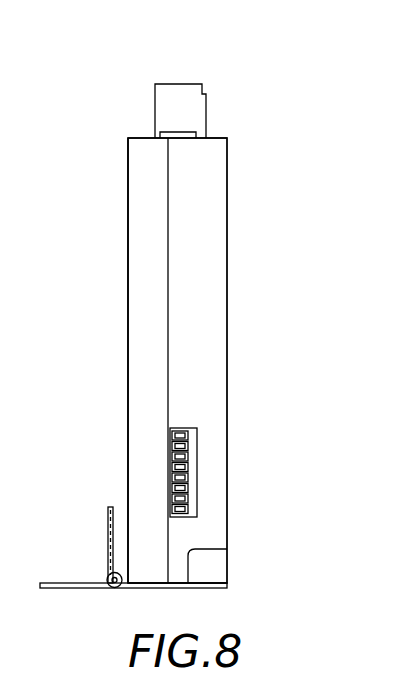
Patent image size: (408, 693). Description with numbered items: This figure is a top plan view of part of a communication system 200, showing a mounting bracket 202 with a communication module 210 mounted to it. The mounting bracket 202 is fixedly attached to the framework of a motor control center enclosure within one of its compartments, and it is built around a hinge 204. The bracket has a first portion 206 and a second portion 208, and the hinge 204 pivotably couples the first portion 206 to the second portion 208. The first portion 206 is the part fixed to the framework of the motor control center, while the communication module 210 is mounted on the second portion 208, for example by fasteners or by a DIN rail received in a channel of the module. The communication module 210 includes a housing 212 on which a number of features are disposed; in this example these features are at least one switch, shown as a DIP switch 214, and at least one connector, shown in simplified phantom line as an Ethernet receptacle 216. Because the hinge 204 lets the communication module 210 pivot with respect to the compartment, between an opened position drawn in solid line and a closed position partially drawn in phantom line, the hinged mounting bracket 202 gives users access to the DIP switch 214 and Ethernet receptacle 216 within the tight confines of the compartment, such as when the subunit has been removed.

The communication system 200 is at (36, 618).
The mounting bracket 202 is at (102, 600).
The hinge 204 is at (117, 588).
The first portion 206 is at (108, 510).
The second portion 208 is at (190, 588).
The communication module 210 is at (111, 210).
The housing 212 is at (143, 281).
The DIP switch 214 is at (199, 454).
The Ethernet receptacle 216 is at (155, 116).